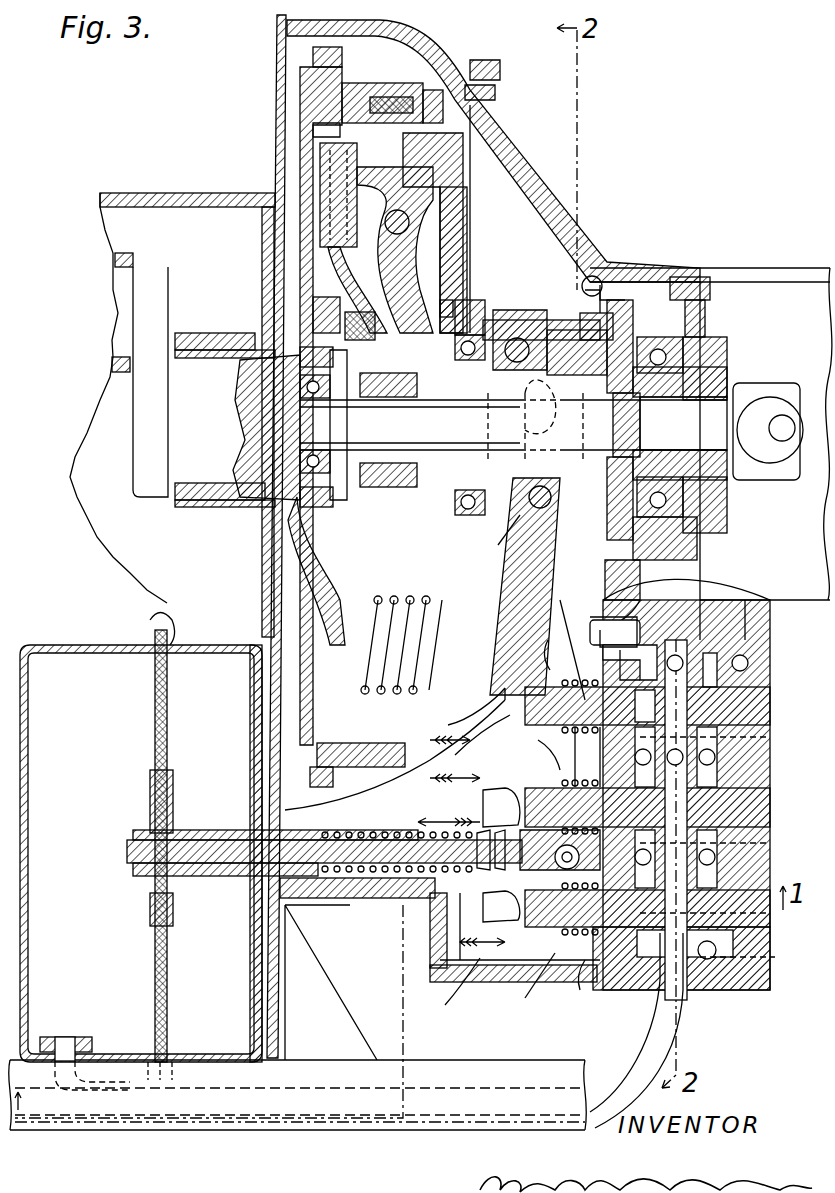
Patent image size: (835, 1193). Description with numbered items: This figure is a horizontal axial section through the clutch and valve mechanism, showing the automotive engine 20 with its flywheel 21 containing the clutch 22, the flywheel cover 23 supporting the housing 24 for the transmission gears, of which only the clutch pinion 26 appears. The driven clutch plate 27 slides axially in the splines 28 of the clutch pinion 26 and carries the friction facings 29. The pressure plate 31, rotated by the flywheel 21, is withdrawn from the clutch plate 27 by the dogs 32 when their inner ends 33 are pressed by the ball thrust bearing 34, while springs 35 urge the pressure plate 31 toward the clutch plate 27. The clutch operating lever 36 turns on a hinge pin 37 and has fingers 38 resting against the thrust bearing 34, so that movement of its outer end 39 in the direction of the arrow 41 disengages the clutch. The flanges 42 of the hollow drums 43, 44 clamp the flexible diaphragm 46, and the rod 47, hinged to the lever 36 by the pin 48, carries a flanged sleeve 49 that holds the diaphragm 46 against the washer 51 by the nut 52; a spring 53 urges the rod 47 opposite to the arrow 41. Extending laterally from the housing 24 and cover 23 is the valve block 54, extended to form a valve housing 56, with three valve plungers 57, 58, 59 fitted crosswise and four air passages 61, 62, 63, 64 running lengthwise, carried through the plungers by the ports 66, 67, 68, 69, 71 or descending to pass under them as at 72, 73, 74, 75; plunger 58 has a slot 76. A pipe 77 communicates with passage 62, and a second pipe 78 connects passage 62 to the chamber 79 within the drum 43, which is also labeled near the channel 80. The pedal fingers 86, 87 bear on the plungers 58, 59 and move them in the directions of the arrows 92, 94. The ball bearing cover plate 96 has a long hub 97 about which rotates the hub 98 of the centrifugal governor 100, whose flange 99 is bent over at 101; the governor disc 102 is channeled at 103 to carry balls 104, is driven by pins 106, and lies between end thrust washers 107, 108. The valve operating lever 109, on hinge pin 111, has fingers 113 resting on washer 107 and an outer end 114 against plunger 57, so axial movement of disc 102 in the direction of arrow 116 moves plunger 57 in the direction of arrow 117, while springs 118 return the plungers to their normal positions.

The automotive engine 20 is at (150, 210).
The flywheel 21 is at (300, 98).
The clutch 22 is at (468, 264).
The flywheel cover 23 is at (420, 40).
The housing 24 is at (760, 282).
The clutch pinion 26 is at (728, 344).
The driven clutch plate 27 is at (318, 137).
The splines 28 is at (368, 440).
The friction facings 29 is at (345, 168).
The pressure plate 31 is at (362, 598).
The dogs 32 is at (398, 175).
The inner ends 33 is at (386, 372).
The ball thrust bearing 34 is at (480, 304).
The springs 35 is at (383, 618).
The clutch operating lever 36 is at (535, 340).
The hinge pin 37 is at (540, 327).
The fingers 38 is at (495, 430).
The outer end 39 is at (560, 767).
The arrow 41 is at (425, 819).
The flanges 42 is at (156, 626).
The hollow drum 43 is at (75, 636).
The hollow drum 44 is at (212, 648).
The flexible diaphragm 46 is at (155, 670).
The rod 47 is at (190, 877).
The pin 48 is at (565, 857).
The flanged sleeve 49 is at (205, 830).
The washer 51 is at (148, 928).
The nut 52 is at (145, 876).
The spring 53 is at (355, 879).
The valve block 54 is at (768, 603).
The valve housing 56 is at (470, 964).
The valve plunger 57 is at (770, 704).
The valve plunger 58 is at (770, 802).
The valve plunger 59 is at (768, 931).
The air passage 61 is at (640, 665).
The air passage 62 is at (695, 600).
The air passage 63 is at (730, 640).
The air passage 64 is at (765, 640).
The port 66 is at (569, 807).
The port 67 is at (720, 704).
The port 68 is at (700, 768).
The port 69 is at (590, 950).
The port 71 is at (700, 885).
The passage descent under plunger 72 is at (640, 762).
The passage descent under plunger 73 is at (762, 735).
The passage descent under plunger 74 is at (762, 837).
The passage descent under plunger 75 is at (770, 958).
The slot 76 is at (529, 989).
The pipe 77 is at (554, 640).
The second pipe 78 is at (657, 1060).
The chamber 79 is at (125, 1060).
The channel 80 is at (213, 1060).
The finger 86 is at (485, 806).
The finger 87 is at (474, 928).
The arrow 92 is at (470, 748).
The arrow 94 is at (459, 992).
The ball bearing cover plate 96 is at (620, 305).
The long hub 97 is at (625, 440).
The governor hub 98 is at (580, 378).
The flange 99 is at (605, 300).
The centrifugal governor 100 is at (598, 270).
The bent-over portion 101 is at (605, 300).
The governor disc 102 is at (572, 282).
The channel 103 is at (575, 270).
The balls 104 is at (590, 275).
The pins 106 is at (676, 400).
The end thrust washer 107 is at (686, 423).
The end thrust washer 108 is at (720, 472).
The valve operating lever 109 is at (506, 586).
The hinge pin 111 is at (487, 453).
The fingers 113 is at (535, 420).
The outer end 114 is at (486, 717).
The arrow 116 is at (530, 299).
The arrow 117 is at (442, 741).
The springs 118 is at (560, 994).